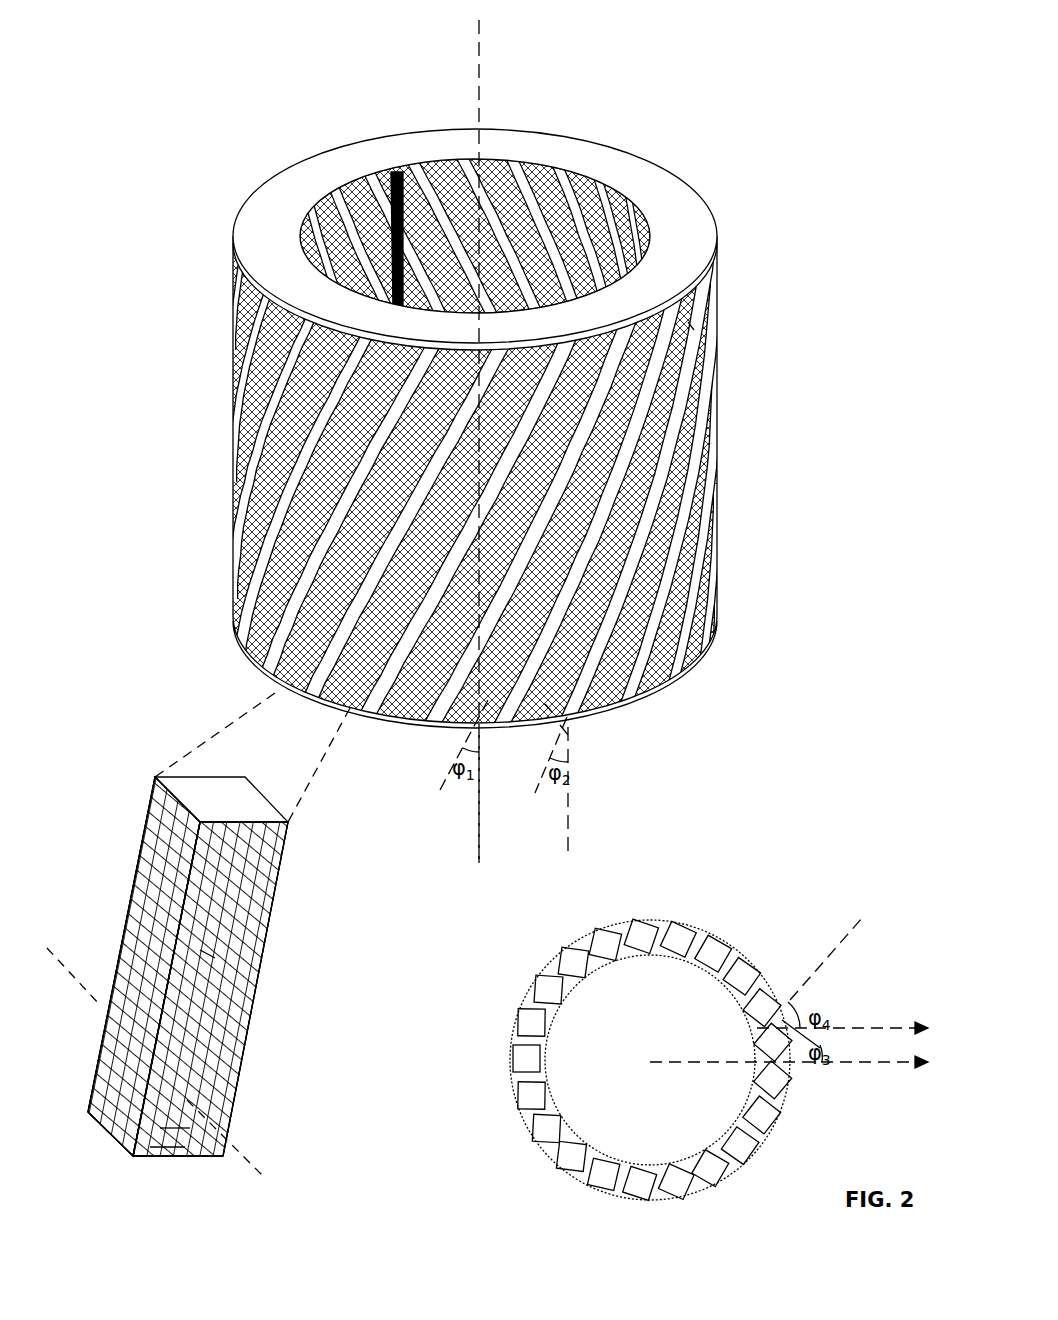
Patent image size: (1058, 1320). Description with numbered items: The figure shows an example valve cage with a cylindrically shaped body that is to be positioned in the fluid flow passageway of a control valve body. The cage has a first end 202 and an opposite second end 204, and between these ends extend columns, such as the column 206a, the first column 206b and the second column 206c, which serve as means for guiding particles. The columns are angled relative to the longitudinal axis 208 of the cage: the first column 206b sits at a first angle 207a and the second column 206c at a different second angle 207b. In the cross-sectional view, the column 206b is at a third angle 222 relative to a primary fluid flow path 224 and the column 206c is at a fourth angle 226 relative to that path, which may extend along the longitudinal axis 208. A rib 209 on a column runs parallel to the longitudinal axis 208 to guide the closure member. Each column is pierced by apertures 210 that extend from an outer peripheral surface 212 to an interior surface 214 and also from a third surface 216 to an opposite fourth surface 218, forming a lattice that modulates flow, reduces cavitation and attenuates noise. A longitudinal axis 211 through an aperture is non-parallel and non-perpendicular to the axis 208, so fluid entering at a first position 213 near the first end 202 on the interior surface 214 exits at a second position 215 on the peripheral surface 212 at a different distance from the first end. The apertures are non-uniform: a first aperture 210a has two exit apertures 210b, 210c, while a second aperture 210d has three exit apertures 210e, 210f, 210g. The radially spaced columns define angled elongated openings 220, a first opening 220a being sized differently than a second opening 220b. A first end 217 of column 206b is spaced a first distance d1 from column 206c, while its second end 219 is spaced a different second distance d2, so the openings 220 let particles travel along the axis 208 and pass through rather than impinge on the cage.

The first end 202 is at (272, 205).
The second end 204 is at (255, 662).
The column 206a is at (420, 705).
The first column 206b is at (568, 728).
The second column 206c is at (625, 652).
The first angle 207a is at (458, 765).
The second angle 207b is at (568, 762).
The longitudinal axis 208 is at (483, 40).
The rib 209 is at (394, 175).
The aperture 210 is at (394, 946).
The first aperture 210a is at (140, 887).
The exit aperture 210b is at (198, 940).
The exit aperture 210c is at (215, 955).
The second aperture 210d is at (105, 1095).
The exit aperture 210e is at (160, 1133).
The exit aperture 210f is at (168, 1147).
The exit aperture 210g is at (172, 1128).
The longitudinal axis of aperture 211 is at (95, 1000).
The outer peripheral surface 212 is at (718, 245).
The first position 213 is at (262, 882).
The interior surface 214 is at (501, 274).
The second position 215 is at (272, 906).
The third surface 216 is at (170, 827).
The first end of column 217 is at (537, 569).
The fourth surface 218 is at (290, 842).
The second end of column 219 is at (506, 799).
The elongated opening 220 is at (484, 172).
The first elongated opening 220a is at (650, 478).
The second elongated opening 220b is at (688, 528).
The third angle 222 is at (827, 1043).
The primary fluid flow path 224 is at (852, 1027).
The fourth angle 226 is at (813, 997).
The first distance d1 is at (690, 326).
The second distance d2 is at (548, 708).